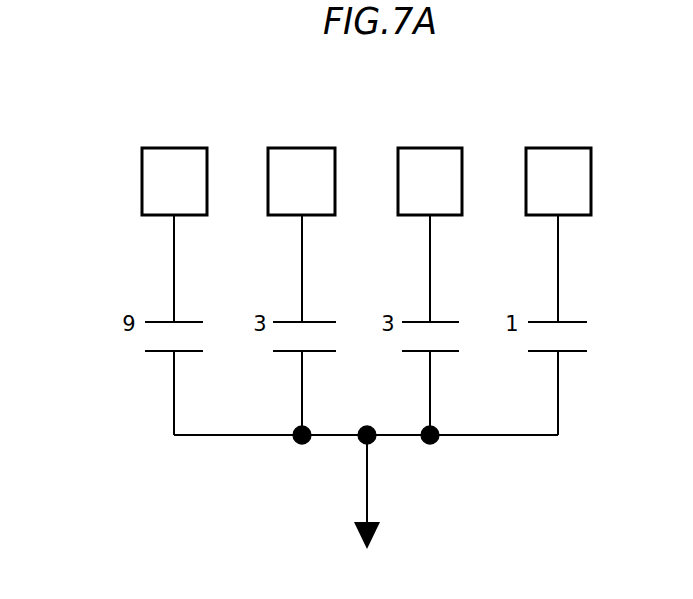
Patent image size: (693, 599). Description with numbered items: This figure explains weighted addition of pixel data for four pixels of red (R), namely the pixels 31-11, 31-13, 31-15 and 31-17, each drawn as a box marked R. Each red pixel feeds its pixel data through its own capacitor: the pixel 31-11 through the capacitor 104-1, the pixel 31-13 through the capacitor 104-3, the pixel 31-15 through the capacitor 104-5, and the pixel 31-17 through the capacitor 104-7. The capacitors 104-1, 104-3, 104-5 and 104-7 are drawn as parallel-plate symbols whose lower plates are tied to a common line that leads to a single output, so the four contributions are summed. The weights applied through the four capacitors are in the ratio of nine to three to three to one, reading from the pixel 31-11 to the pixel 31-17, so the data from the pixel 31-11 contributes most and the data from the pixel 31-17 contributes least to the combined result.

The pixel of red (R) 31-11 is at (177, 148).
The pixel of red (R) 31-13 is at (302, 148).
The pixel of red (R) 31-15 is at (431, 148).
The pixel of red (R) 31-17 is at (560, 148).
The capacitor 104-1 is at (168, 352).
The capacitor 104-3 is at (318, 352).
The capacitor 104-5 is at (447, 352).
The capacitor 104-7 is at (567, 352).